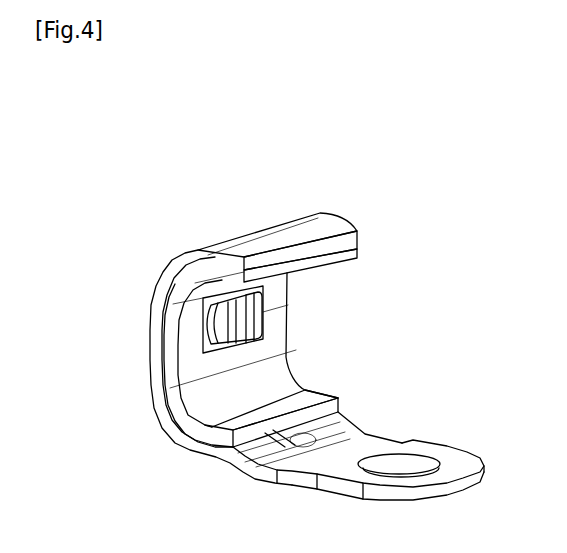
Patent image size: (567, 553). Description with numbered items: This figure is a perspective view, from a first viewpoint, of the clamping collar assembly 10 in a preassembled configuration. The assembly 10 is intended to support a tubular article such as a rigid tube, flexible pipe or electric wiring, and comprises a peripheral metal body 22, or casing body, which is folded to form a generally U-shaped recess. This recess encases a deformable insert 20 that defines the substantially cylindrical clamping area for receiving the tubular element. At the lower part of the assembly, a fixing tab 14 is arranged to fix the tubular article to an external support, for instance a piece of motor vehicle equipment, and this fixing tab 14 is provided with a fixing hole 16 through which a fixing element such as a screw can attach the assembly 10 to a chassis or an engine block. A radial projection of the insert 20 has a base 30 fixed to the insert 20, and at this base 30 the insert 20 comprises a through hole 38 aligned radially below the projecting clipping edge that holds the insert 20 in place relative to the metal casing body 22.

The clamping collar assembly 10 is at (356, 179).
The fixing tab 14 is at (358, 450).
The fixing hole 16 is at (403, 456).
The deformable insert 20 is at (319, 328).
The peripheral metal body 22 is at (242, 247).
The base 30 is at (171, 367).
The through hole 38 is at (208, 326).